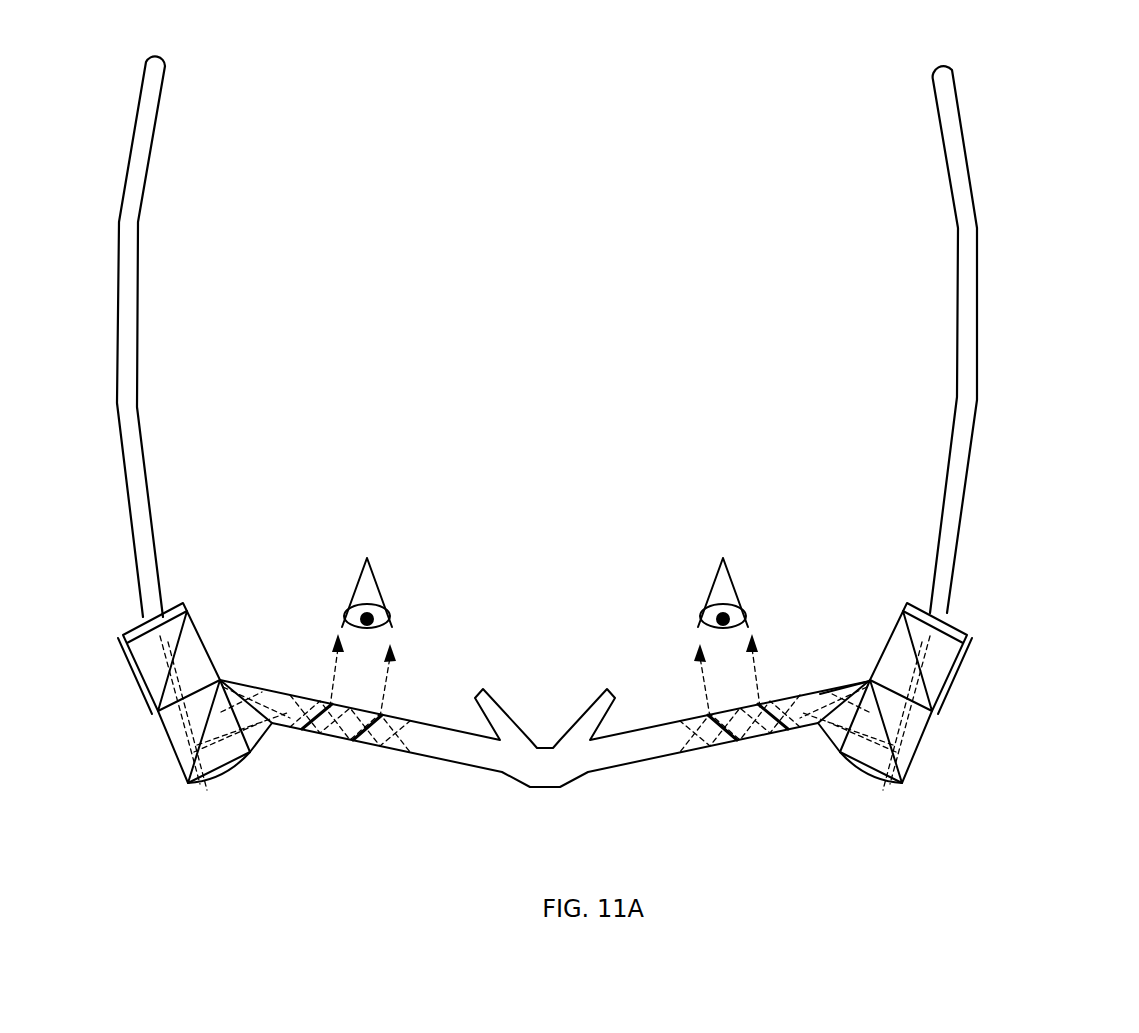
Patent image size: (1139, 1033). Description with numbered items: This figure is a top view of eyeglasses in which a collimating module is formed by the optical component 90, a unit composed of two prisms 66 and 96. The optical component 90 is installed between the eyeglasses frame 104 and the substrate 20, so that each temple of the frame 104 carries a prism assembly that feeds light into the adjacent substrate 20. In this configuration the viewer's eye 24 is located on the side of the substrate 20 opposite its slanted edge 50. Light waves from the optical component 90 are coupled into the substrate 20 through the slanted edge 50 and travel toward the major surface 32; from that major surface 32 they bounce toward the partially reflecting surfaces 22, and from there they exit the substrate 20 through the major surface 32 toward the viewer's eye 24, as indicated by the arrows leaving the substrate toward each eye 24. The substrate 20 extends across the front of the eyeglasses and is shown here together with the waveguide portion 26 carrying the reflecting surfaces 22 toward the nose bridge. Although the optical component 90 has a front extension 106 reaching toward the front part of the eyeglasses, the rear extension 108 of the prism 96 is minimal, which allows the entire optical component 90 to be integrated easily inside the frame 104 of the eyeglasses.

The substrate 20 is at (447, 740).
The partially reflecting surfaces 22 is at (343, 713).
The viewer's eye 24 is at (380, 593).
The optical waveguide 26 is at (418, 750).
The major surface 32 is at (263, 688).
The slanted edge 50 is at (845, 690).
The prism 66 is at (907, 750).
The optical component 90 is at (965, 740).
The prism 96 is at (933, 688).
The eyeglasses frame 104 is at (938, 117).
The front extension 106 is at (878, 757).
The rear extension 108 is at (960, 652).